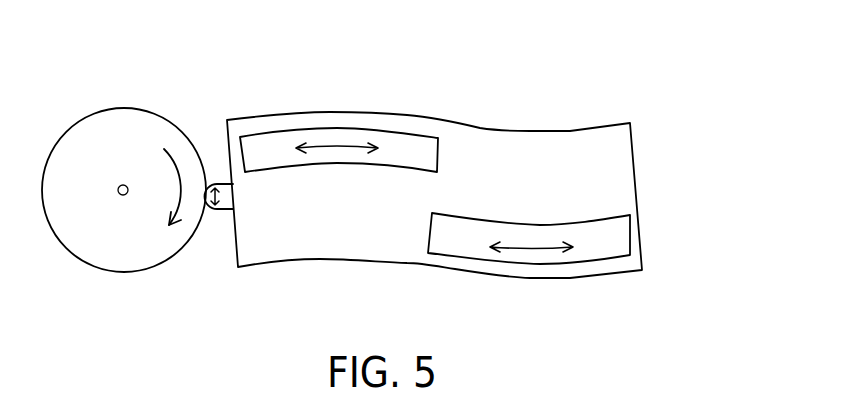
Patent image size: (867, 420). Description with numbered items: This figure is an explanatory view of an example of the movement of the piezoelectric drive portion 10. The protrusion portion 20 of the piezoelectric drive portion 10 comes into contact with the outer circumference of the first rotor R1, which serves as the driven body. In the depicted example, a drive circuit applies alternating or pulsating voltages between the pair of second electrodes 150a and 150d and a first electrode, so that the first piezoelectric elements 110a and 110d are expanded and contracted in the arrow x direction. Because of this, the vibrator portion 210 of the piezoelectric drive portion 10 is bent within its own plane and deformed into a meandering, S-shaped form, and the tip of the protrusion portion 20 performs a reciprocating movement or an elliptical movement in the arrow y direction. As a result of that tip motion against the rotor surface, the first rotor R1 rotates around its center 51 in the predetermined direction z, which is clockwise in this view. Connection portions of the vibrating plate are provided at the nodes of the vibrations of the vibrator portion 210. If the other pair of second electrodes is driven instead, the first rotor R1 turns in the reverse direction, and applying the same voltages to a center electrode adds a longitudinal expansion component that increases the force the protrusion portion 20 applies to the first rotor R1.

The piezoelectric drive portion 10 is at (672, 86).
The protrusion portion 20 is at (213, 183).
The center 51 is at (120, 185).
The first rotor R1 is at (102, 110).
The vibrator portion 210 is at (602, 125).
The second electrode 150a is at (367, 125).
The first piezoelectric element 110a is at (347, 128).
The second electrode 150d is at (544, 264).
The first piezoelectric element 110d is at (517, 263).
The arrow X direction x is at (318, 148).
The arrow y direction y is at (228, 202).
The predetermined direction z is at (178, 195).